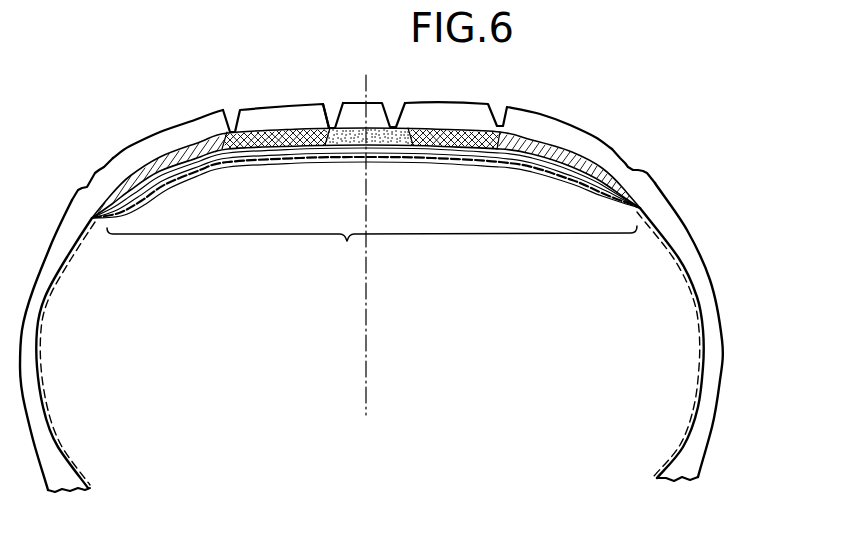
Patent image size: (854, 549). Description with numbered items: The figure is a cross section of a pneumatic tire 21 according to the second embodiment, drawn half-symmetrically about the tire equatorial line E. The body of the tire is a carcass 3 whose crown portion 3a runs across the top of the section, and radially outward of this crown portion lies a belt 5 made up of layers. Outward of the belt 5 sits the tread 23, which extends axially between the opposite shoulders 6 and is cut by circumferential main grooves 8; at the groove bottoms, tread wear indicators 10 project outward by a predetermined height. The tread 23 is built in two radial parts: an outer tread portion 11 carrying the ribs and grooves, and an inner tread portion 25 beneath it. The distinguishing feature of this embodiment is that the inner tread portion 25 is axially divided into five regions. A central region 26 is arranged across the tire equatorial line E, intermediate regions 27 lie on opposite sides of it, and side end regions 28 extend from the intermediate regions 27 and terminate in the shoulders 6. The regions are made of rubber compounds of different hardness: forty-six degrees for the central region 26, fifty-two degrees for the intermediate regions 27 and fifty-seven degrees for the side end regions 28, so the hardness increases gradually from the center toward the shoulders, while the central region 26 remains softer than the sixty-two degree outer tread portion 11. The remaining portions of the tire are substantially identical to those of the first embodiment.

The carcass 3 is at (52, 283).
The crown portion of the carcass 3a is at (372, 248).
The belt 5 is at (268, 158).
The shoulder 6 is at (113, 159).
The circumferential main groove 8 is at (330, 104).
The tread wear indicator 10 is at (393, 126).
The outer tread portion 11 is at (288, 108).
The pneumatic tire 21 is at (527, 96).
The tread 23 is at (457, 101).
The inner tread portion 25 is at (176, 139).
The central region 26 is at (370, 143).
The intermediate region 27 is at (303, 148).
The side end region 28 is at (150, 164).
The tire equatorial line E is at (369, 347).